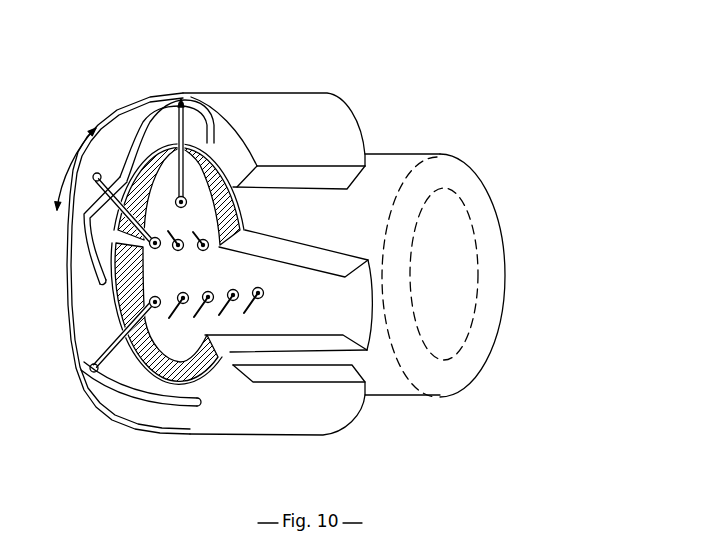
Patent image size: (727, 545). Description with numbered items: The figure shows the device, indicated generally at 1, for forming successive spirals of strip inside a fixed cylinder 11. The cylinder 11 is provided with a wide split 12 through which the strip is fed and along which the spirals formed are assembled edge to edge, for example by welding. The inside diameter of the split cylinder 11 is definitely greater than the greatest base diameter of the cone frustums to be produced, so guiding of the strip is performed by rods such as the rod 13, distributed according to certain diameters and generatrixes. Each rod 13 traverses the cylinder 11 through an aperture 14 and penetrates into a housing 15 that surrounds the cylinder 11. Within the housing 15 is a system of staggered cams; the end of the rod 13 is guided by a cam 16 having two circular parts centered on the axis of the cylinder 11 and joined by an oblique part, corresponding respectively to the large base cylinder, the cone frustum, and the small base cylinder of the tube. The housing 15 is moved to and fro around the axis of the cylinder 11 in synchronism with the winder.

The electric motor stator assembly 1 is at (404, 116).
The fixed cylinder 11 is at (488, 257).
The wide split 12 is at (322, 320).
The rod 13 is at (92, 185).
The aperture 14 is at (133, 235).
The housing 15 is at (262, 422).
The cam 16 is at (85, 218).